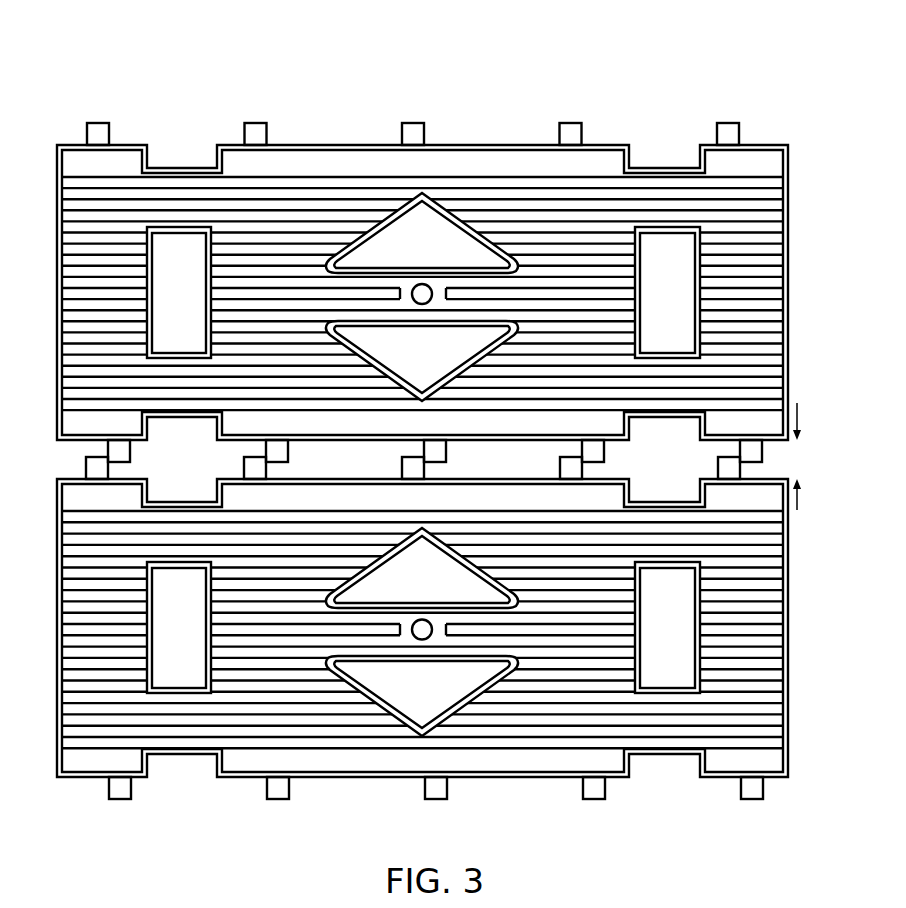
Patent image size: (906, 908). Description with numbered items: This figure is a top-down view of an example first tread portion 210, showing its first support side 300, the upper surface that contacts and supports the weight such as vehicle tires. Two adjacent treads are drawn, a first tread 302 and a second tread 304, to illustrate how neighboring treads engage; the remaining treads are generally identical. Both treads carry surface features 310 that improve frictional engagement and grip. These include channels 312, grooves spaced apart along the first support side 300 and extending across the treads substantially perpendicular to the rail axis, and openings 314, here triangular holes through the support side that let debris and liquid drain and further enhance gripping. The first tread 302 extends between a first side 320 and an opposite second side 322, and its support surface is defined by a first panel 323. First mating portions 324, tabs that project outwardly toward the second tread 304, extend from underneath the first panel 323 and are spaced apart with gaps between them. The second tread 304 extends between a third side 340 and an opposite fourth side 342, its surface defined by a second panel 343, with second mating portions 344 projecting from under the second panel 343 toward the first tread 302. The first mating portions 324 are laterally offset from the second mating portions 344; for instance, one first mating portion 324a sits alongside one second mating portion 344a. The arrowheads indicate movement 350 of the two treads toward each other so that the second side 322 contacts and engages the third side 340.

The first tread portion 210 is at (116, 64).
The first support side 300 is at (770, 283).
The first tread 302 is at (57, 620).
The second tread 304 is at (57, 318).
The surface features 310 is at (762, 218).
The channels 312 is at (755, 175).
The openings 314 is at (430, 225).
The first side 320 is at (310, 778).
The second side 322 is at (64, 473).
The first panel 323 is at (788, 630).
The first mating portion 324 is at (245, 124).
The one of the first mating portions 324a is at (400, 470).
The third side 340 is at (64, 446).
The fourth side 342 is at (283, 145).
The second panel 343 is at (788, 373).
The second mating portion 344 is at (290, 450).
The one of the second mating portions 344a is at (447, 450).
The movement 350 is at (805, 403).